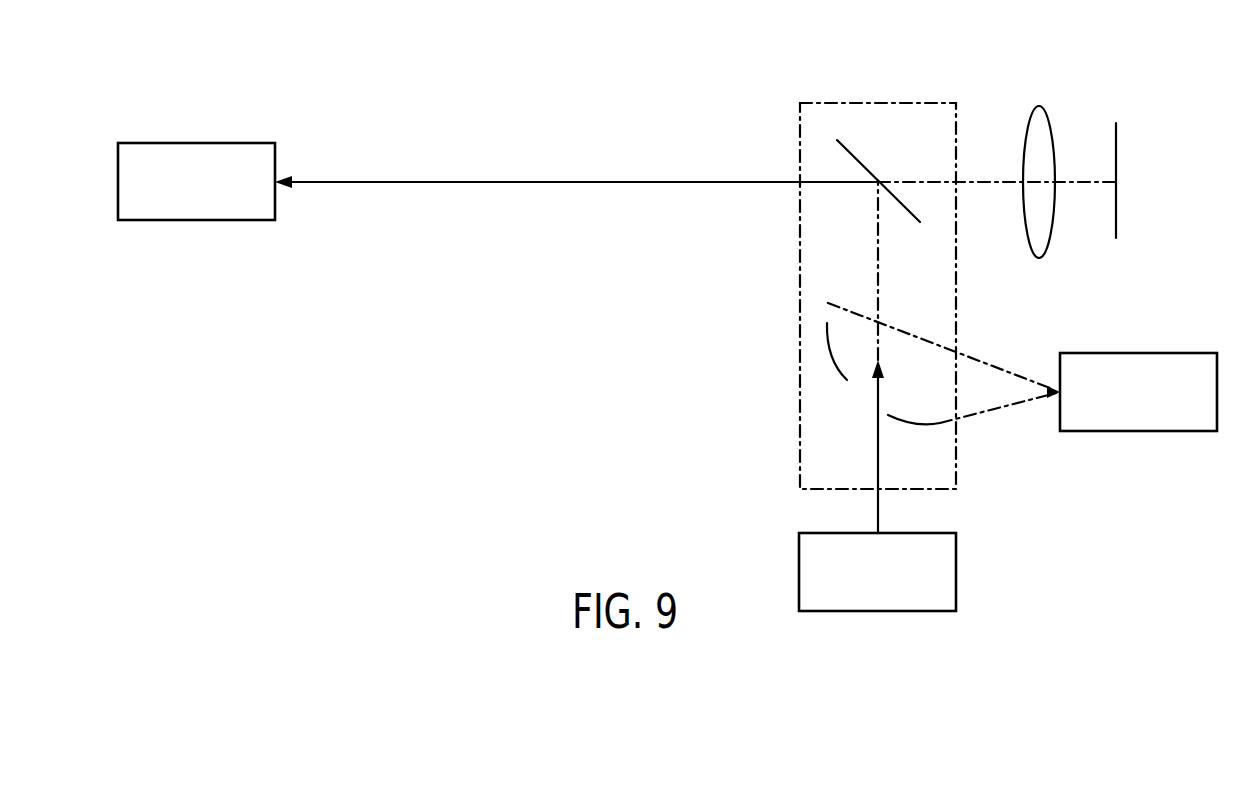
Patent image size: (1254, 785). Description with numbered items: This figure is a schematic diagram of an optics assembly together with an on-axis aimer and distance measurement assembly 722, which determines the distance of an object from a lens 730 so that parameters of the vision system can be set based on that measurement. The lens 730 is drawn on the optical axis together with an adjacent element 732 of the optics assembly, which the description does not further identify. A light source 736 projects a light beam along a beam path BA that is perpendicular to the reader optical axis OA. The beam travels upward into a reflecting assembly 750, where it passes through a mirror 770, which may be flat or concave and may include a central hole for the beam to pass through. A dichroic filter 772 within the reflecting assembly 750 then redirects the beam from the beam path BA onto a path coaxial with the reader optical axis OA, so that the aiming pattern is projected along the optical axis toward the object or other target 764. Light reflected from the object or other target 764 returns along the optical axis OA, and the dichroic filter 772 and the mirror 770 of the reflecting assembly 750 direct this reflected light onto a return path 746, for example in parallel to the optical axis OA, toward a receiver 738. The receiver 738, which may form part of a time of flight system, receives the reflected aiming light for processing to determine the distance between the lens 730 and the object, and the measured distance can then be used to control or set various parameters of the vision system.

The on-axis aimer and distance measurement assembly 722 is at (625, 475).
The lens 730 is at (1048, 120).
The aperture / window 732 is at (1116, 152).
The light source 736 is at (877, 611).
The receiver 738 is at (1138, 431).
The return path 746 is at (1002, 368).
The reflecting assembly 750 is at (840, 102).
The object or other target 764 is at (197, 143).
The mirror 770 is at (833, 352).
The dichroic filter 772 is at (860, 160).
The reader optical axis OA is at (583, 182).
The beam path/axis BA is at (878, 512).